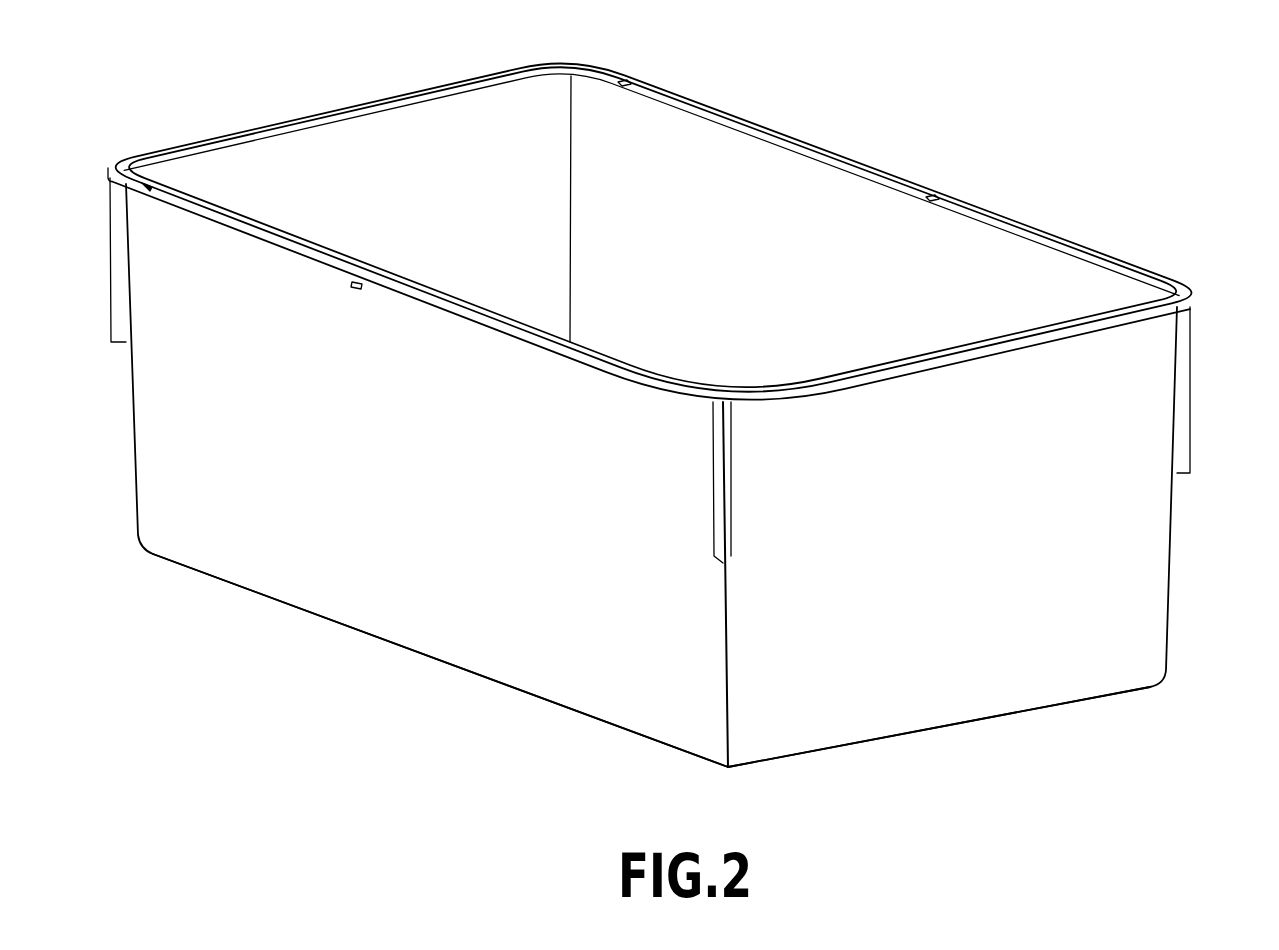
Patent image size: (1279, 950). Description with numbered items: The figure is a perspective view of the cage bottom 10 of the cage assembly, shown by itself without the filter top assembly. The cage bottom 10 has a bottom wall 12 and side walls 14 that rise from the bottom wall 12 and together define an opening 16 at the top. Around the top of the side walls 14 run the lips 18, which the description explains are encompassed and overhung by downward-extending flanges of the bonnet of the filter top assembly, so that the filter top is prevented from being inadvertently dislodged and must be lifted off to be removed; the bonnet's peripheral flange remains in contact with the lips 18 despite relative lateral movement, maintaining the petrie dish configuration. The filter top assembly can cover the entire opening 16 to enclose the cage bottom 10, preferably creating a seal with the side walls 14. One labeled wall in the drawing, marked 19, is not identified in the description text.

The cage bottom 10 is at (677, 453).
The bottom wall 12 is at (803, 757).
The side walls 14 is at (393, 481).
The opening 16 is at (937, 242).
The lips 18 is at (1042, 341).
The second side wall 19 is at (981, 521).